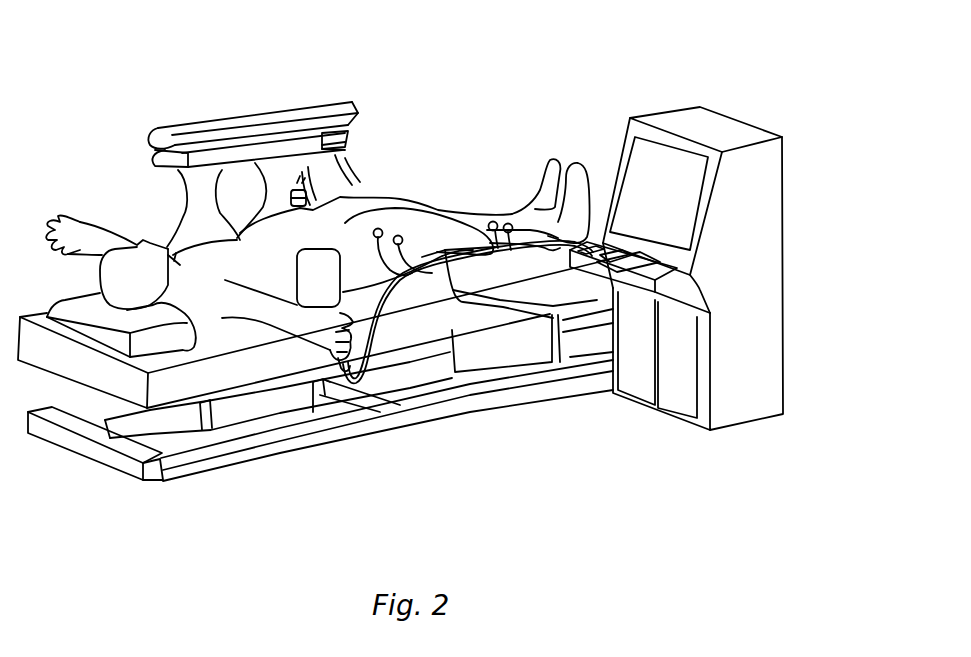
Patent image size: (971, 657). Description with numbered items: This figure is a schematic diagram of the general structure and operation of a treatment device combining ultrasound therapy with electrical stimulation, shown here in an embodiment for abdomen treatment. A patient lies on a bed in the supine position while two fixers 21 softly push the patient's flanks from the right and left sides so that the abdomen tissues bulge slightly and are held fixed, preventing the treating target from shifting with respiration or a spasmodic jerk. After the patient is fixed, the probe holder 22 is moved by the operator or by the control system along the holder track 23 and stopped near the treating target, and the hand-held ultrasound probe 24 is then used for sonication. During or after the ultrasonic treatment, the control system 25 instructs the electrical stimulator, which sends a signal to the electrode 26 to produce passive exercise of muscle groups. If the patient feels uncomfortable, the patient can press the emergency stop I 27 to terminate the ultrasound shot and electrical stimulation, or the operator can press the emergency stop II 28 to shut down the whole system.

The fixers 21 is at (317, 295).
The probe holder 22 is at (338, 148).
The holder track 23 is at (153, 152).
The hand-held ultrasound probe 24 is at (294, 188).
The control system 25 is at (720, 124).
The electrode 26 is at (488, 226).
The emergency stop I 27 is at (370, 362).
The emergency stop II 28 is at (590, 260).